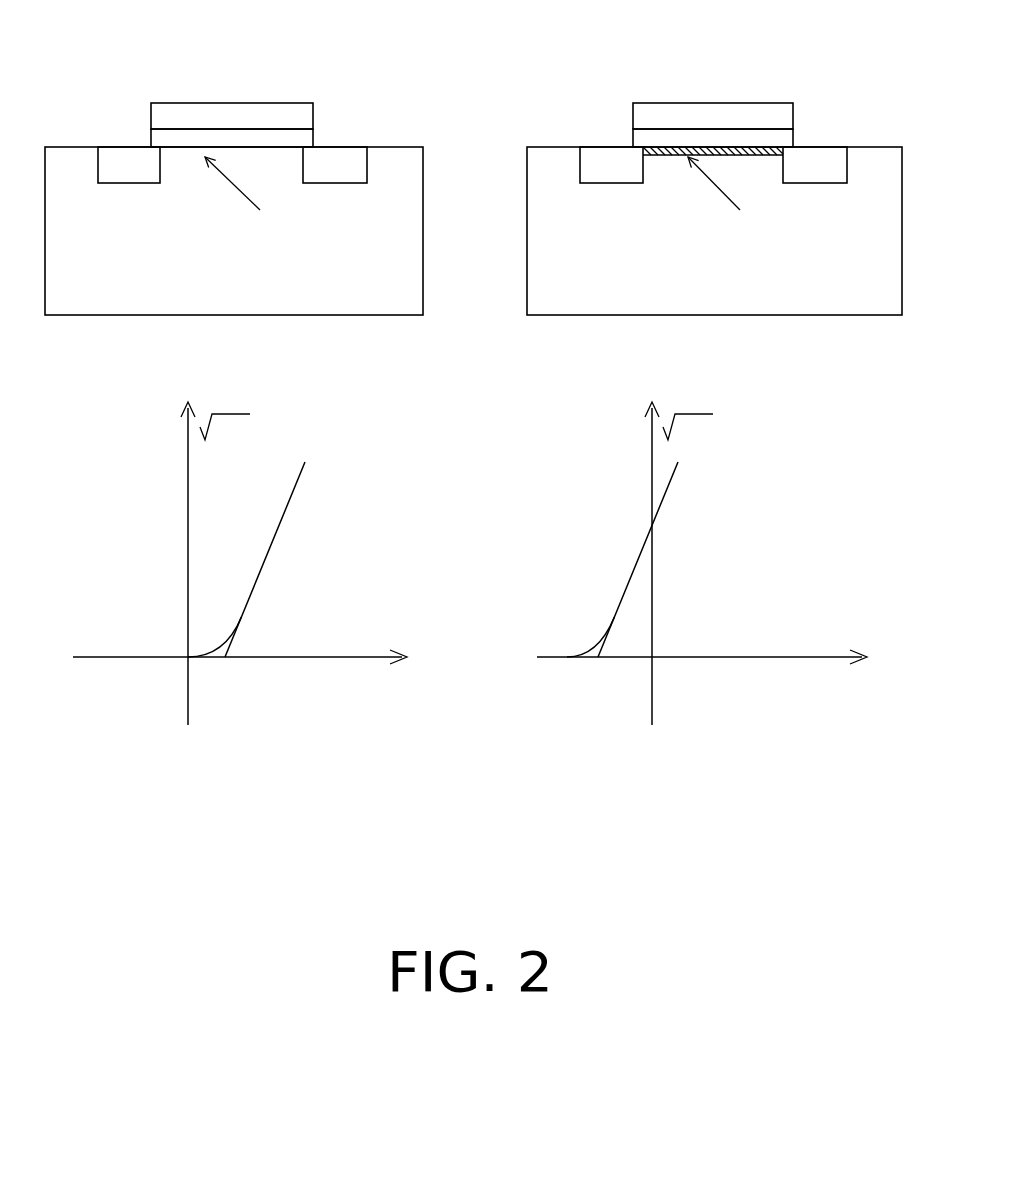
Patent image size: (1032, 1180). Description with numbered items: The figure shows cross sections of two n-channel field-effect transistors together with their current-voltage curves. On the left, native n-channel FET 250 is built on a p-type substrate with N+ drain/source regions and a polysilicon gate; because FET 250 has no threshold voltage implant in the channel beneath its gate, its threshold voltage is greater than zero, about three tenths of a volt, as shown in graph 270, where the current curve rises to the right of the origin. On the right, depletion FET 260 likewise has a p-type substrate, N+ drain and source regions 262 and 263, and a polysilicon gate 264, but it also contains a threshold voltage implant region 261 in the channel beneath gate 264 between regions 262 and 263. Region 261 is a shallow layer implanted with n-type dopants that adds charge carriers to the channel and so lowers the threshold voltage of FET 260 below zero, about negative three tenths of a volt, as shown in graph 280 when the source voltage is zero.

The native n-channel FET 250 is at (237, 75).
The depletion FET 260 is at (714, 168).
The threshold voltage implant region 261 is at (729, 156).
The N+ drain/source region 262 is at (608, 184).
The N+ drain/source region 263 is at (847, 174).
The polysilicon gate 264 is at (792, 138).
The graph 270 is at (358, 527).
The graph 280 is at (773, 502).